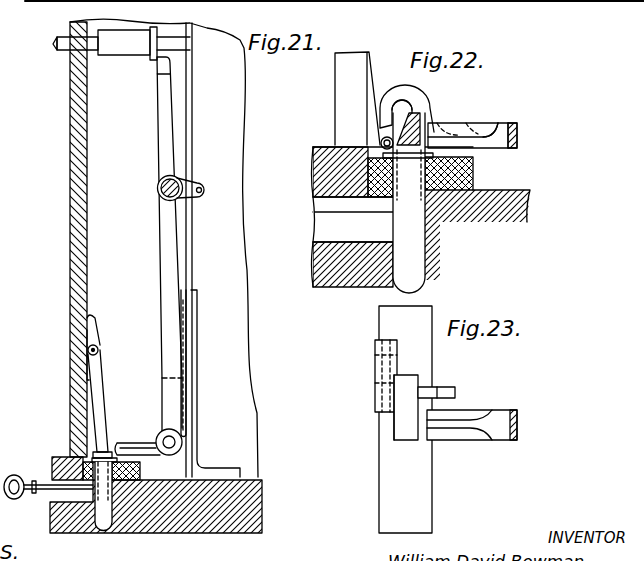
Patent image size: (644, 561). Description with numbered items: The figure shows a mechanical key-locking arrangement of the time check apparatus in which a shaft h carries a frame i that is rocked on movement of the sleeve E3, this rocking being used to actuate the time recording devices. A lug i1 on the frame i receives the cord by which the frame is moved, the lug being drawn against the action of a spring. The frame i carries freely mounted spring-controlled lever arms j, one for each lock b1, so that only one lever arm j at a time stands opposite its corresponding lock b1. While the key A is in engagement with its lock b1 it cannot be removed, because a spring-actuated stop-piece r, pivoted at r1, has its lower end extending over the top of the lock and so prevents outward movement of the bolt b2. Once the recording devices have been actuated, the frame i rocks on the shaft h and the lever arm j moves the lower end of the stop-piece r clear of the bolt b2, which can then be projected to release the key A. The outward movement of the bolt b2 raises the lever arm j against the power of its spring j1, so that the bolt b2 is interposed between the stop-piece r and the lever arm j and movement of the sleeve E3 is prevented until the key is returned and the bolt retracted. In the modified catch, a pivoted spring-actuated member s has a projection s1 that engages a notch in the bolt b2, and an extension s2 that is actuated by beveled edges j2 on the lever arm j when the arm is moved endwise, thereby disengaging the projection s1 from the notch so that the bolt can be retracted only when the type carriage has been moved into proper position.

In FIG. 21, the sleeve E3 is at (128, 48).
In FIG. 21, the shaft h is at (172, 181).
In FIG. 21, the frame i is at (178, 238).
In FIG. 21, the lug i1 is at (206, 189).
In FIG. 21, the lever arm j is at (136, 450).
In FIG. 22, the lever arm j is at (512, 122).
In FIG. 23, the lever arm j is at (507, 412).
In FIG. 21, the spring j1 is at (186, 408).
In FIG. 22, the beveled edges j2 is at (485, 124).
In FIG. 23, the beveled edges j2 is at (468, 440).
In FIG. 21, the stop-piece r is at (107, 388).
In FIG. 21, the pivot r1 is at (98, 349).
In FIG. 21, the lock b1 is at (105, 508).
In FIG. 22, the lock b1 is at (409, 203).
In FIG. 23, the lock b1 is at (378, 456).
In FIG. 21, the bolt b2 is at (97, 455).
In FIG. 22, the bolt b2 is at (413, 125).
In FIG. 23, the bolt b2 is at (397, 422).
In FIG. 21, the key A is at (23, 478).
In FIG. 22, the pivoted spring-actuated member s is at (384, 93).
In FIG. 23, the pivoted spring-actuated member s is at (375, 372).
In FIG. 22, the projection s1 is at (406, 106).
In FIG. 23, the projection s1 is at (397, 385).
In FIG. 22, the extension s2 is at (455, 122).
In FIG. 23, the extension s2 is at (446, 388).